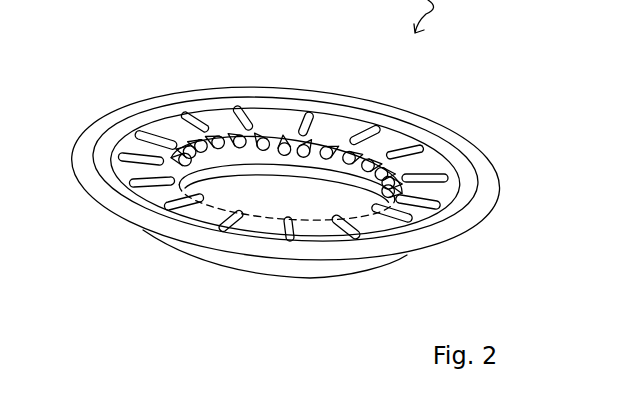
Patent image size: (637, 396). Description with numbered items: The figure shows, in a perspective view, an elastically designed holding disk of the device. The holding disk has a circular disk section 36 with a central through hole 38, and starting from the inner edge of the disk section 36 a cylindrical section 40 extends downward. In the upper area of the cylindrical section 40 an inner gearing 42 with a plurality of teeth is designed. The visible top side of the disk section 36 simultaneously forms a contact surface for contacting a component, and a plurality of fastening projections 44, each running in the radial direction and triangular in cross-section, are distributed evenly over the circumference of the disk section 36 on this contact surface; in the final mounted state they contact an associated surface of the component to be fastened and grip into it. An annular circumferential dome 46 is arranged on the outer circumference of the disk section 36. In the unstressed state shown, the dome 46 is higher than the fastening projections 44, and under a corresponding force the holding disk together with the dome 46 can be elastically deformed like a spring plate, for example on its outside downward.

The disk section 36 is at (227, 118).
The central through hole 38 is at (277, 196).
The cylindrical section 40 is at (273, 268).
The inner gearing 42 is at (357, 160).
The fastening projections 44 is at (143, 157).
The dome 46 is at (480, 173).